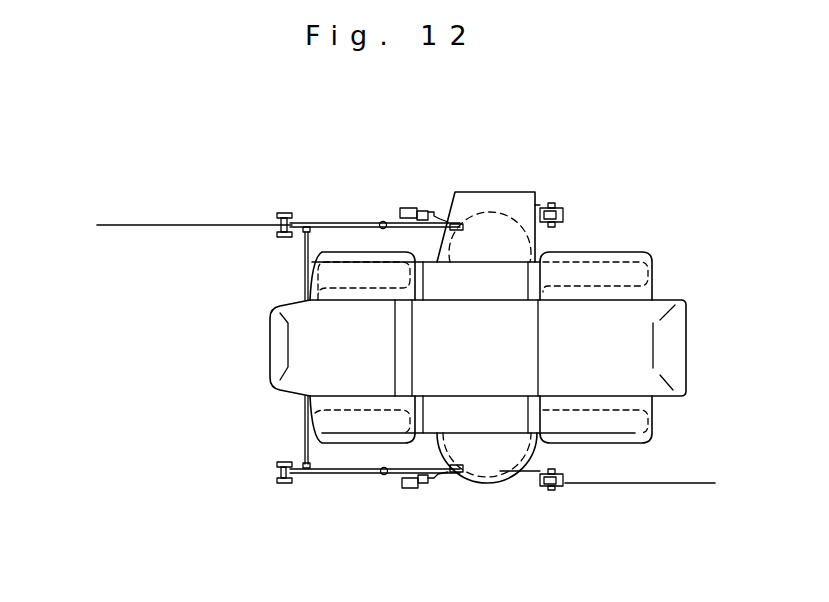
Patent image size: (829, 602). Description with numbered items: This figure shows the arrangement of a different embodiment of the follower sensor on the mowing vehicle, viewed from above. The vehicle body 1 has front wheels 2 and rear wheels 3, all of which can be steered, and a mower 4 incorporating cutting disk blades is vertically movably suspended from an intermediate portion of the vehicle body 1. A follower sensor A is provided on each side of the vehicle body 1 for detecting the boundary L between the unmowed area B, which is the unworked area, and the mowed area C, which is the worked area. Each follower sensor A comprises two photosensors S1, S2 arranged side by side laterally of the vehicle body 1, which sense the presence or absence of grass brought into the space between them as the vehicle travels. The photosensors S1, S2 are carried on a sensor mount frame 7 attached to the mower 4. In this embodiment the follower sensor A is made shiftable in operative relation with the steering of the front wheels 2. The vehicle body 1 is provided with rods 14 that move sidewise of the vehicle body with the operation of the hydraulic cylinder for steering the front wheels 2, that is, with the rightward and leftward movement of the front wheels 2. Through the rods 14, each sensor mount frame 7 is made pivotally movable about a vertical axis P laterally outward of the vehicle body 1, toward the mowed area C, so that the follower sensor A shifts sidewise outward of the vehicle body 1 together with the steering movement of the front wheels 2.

The vehicle body 1 is at (676, 302).
The front wheels 2 is at (357, 253).
The rear wheels 3 is at (620, 252).
The mower 4 is at (519, 191).
The sensor mount frame 7 is at (327, 223).
The rods 14 is at (302, 260).
The vertical axis P is at (383, 222).
The follower sensor A is at (283, 106).
The photosensor S1 is at (277, 232).
The photosensor S2 is at (283, 213).
The boundary L is at (108, 225).
The unmowed area B is at (432, 372).
The mowed area C is at (164, 187).